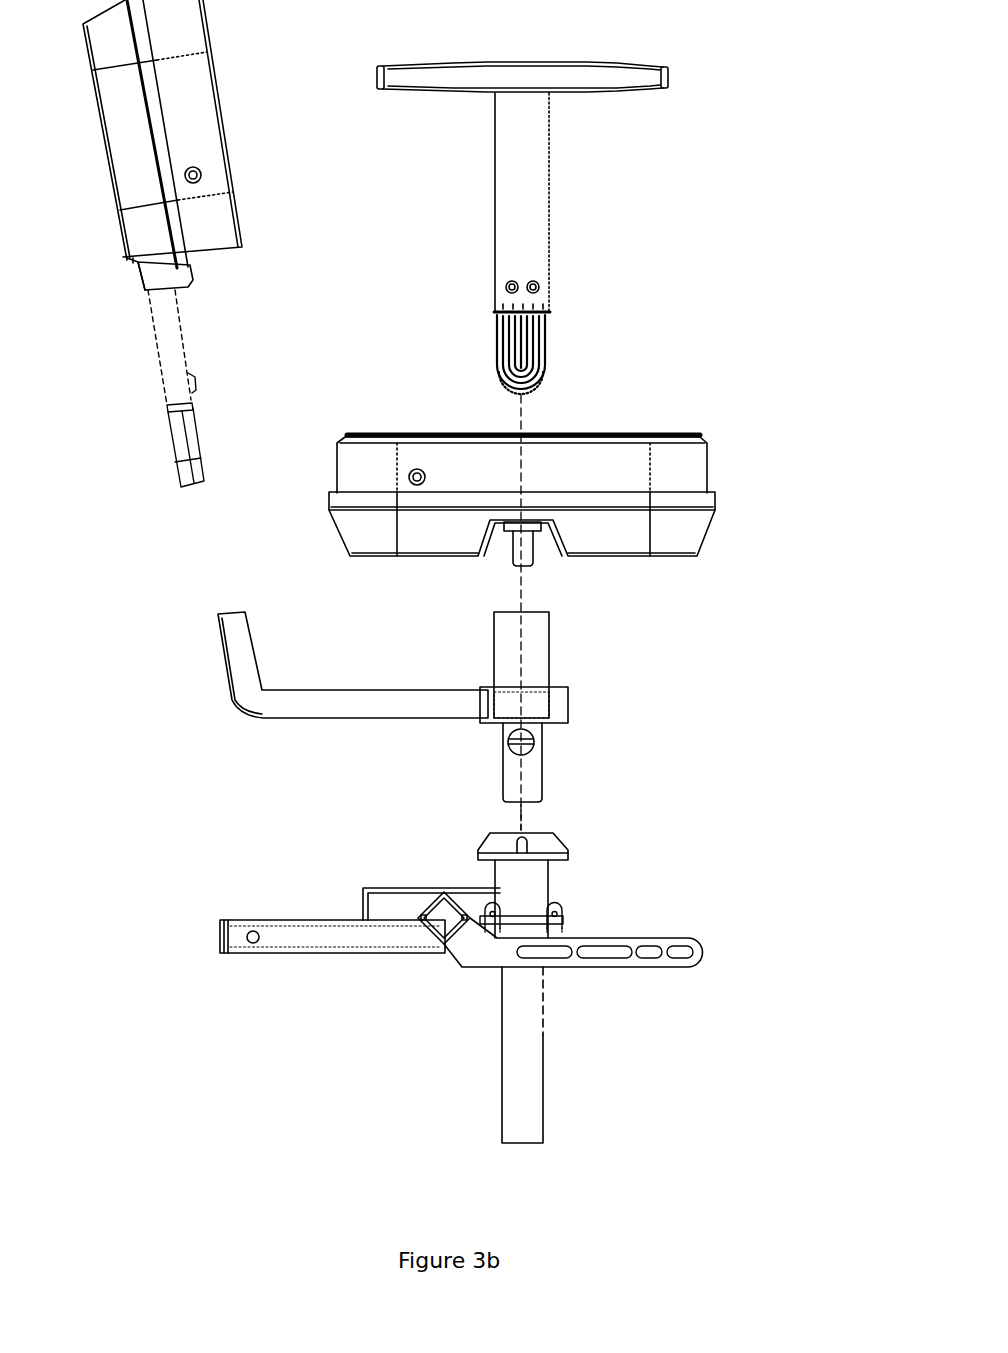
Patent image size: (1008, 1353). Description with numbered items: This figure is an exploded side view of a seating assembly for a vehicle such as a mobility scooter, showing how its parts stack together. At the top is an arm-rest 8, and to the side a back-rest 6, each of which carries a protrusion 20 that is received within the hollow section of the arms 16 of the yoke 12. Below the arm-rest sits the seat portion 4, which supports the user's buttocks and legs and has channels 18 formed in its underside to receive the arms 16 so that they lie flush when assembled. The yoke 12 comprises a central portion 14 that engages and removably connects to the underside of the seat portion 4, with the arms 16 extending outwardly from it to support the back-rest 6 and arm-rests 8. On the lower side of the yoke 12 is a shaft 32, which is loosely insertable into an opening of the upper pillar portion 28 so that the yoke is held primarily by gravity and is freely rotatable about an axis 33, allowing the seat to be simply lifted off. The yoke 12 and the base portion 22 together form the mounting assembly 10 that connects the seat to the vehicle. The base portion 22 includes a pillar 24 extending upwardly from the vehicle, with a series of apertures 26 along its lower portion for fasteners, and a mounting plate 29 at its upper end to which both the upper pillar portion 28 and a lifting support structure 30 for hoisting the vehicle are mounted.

The seat portion 4 is at (658, 540).
The back-rest 6 is at (190, 108).
The arm-rests 8 is at (640, 78).
The mounting assembly 10 is at (782, 628).
The yoke 12 is at (266, 751).
The central portion 14 is at (560, 718).
The arms 16 is at (233, 655).
The channels 18 is at (490, 556).
The protrusion 20 is at (175, 438).
The base portion 22 is at (216, 975).
The pillar 24 is at (488, 1111).
The apertures 26 is at (545, 1118).
The upper pillar portion 28 is at (580, 861).
The mounting plate 29 is at (565, 918).
The lifting support structure 30 is at (437, 980).
The shaft 32 is at (540, 774).
The axis 33 is at (520, 815).